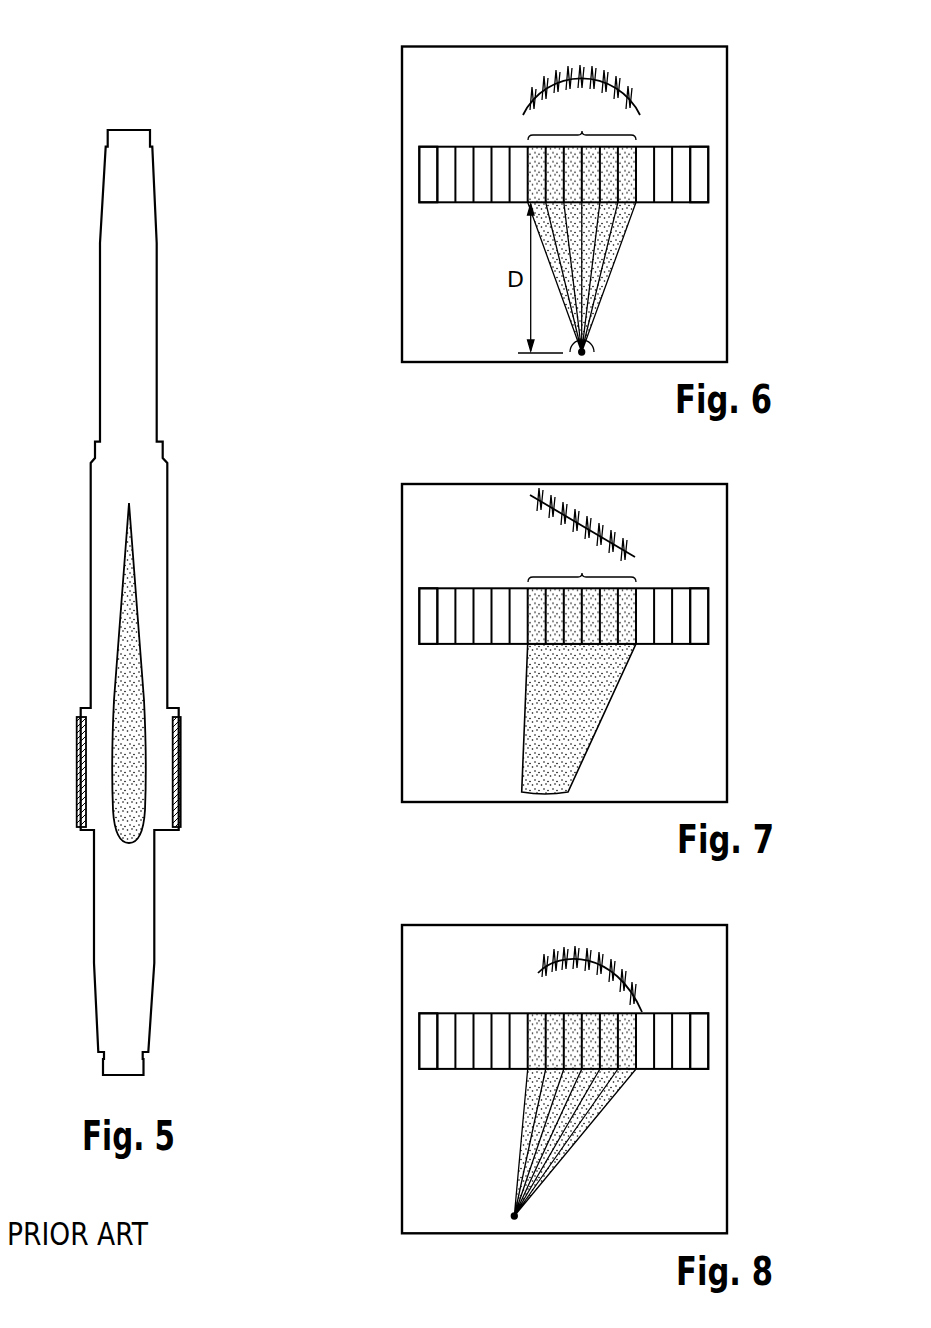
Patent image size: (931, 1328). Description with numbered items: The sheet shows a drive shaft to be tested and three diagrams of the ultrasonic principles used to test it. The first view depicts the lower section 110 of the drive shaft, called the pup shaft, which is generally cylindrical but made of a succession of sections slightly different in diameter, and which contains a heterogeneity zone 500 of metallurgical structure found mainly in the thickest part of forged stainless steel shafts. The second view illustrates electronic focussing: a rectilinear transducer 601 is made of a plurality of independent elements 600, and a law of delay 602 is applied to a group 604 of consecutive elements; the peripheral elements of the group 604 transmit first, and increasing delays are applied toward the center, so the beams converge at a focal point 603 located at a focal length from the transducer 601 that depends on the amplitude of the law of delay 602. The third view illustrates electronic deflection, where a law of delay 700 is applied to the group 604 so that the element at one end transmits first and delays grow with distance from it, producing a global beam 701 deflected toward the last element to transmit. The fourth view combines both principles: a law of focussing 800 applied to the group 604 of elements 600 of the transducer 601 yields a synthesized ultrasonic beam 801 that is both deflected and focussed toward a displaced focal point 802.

In FIG. 5, the lower section of the drive shaft 110 is at (129, 421).
In FIG. 5, the heterogeneity zone 500 is at (128, 673).
In FIG. 6, the independent elements 600 is at (465, 150).
In FIG. 7, the independent elements 600 is at (428, 595).
In FIG. 8, the independent elements 600 is at (428, 1018).
In FIG. 6, the rectilinear transducer 601 is at (715, 173).
In FIG. 7, the rectilinear transducer 601 is at (715, 615).
In FIG. 8, the rectilinear transducer 601 is at (715, 1040).
In FIG. 6, the law of delay 602 is at (617, 82).
In FIG. 6, the focal point 603 is at (595, 352).
In FIG. 6, the group of independent consecutive elements 604 is at (582, 124).
In FIG. 7, the group of independent consecutive elements 604 is at (582, 566).
In FIG. 7, the law of delay 700 is at (587, 517).
In FIG. 7, the steered beam 701 is at (567, 717).
In FIG. 8, the tilted curved excitation wavefront 800 is at (615, 962).
In FIG. 8, the ultrasonic beam 801 is at (593, 1113).
In FIG. 8, the steered focal point 802 is at (512, 1217).